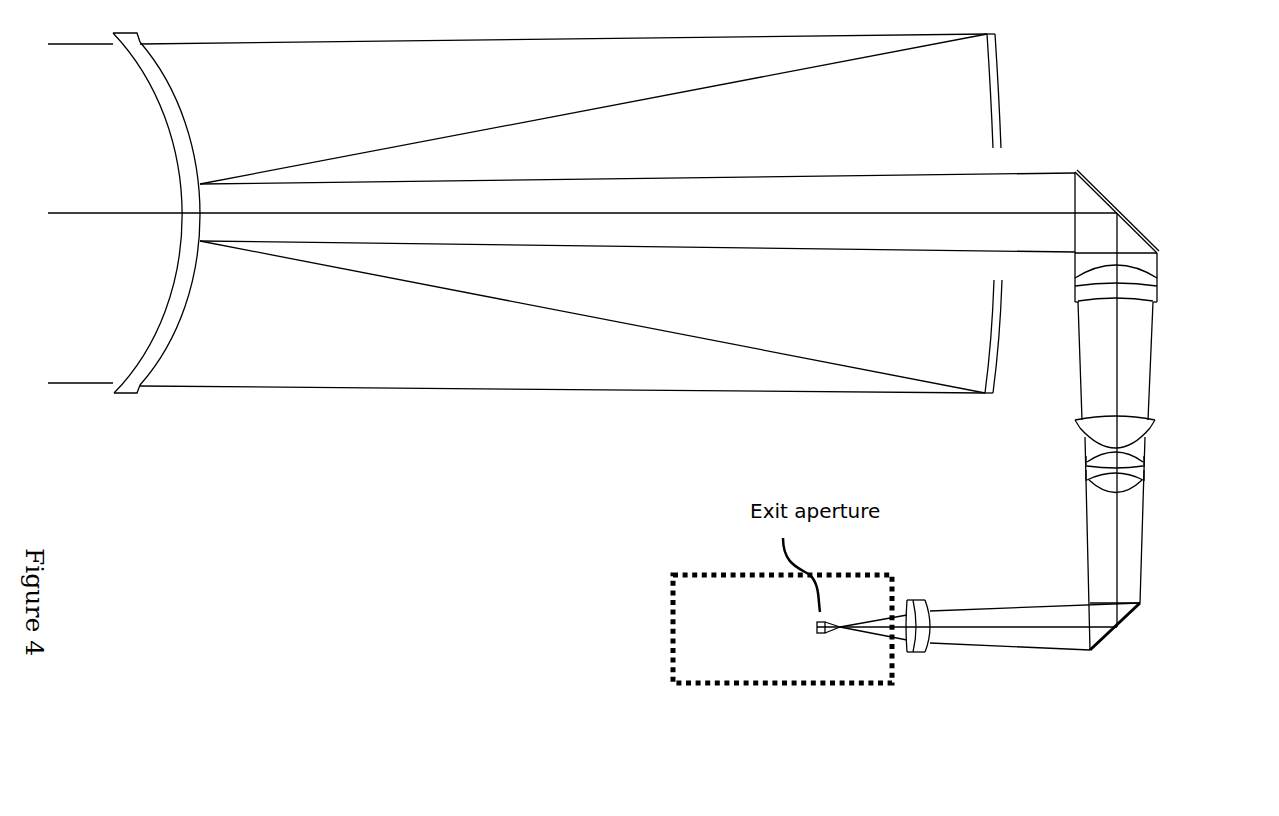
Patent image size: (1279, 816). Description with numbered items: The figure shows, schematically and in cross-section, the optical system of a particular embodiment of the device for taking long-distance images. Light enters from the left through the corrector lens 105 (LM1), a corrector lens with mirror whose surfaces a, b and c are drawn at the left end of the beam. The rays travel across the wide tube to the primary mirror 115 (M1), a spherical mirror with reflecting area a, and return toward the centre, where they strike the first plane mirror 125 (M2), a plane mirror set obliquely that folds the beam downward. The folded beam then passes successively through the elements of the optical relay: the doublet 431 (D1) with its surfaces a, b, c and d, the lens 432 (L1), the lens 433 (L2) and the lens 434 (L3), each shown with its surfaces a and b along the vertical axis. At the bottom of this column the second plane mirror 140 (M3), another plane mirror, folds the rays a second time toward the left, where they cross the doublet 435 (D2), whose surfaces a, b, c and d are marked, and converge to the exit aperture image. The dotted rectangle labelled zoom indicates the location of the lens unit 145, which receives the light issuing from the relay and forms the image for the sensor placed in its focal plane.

The corrector lens 105 is at (180, 138).
The primary mirror 115 is at (990, 67).
The first plane mirror 125 is at (1120, 212).
The doublet 431 is at (1157, 295).
The lens 432 is at (1150, 426).
The lens 433 is at (1145, 453).
The lens 434 is at (1147, 475).
The doublet 435 is at (915, 655).
The second plane mirror 140 is at (1135, 610).
The lens unit 145 is at (688, 587).